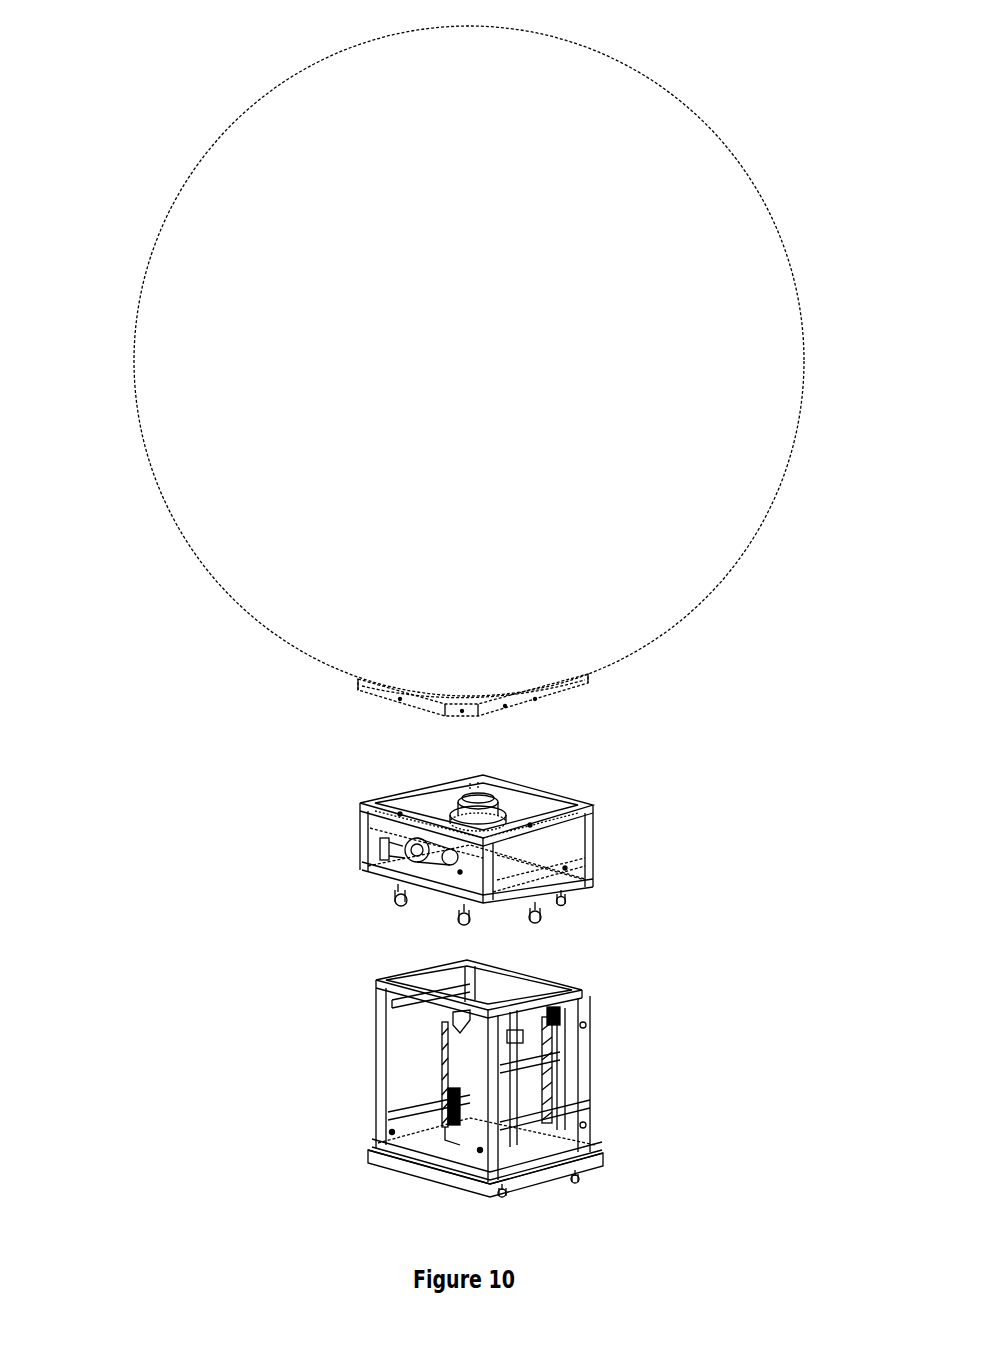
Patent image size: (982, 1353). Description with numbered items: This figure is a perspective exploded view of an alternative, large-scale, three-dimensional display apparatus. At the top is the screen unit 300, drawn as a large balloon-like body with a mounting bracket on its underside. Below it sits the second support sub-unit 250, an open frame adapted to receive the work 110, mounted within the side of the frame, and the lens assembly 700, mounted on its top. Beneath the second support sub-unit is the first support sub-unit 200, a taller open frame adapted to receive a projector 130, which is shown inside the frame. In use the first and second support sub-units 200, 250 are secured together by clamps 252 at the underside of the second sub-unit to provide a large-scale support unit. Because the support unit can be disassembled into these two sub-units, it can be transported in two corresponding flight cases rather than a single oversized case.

The screen unit 300 is at (172, 592).
The second support sub-unit 250 is at (598, 843).
The lens assembly 700 is at (497, 800).
The work 110 is at (408, 850).
The clamps 252 is at (590, 928).
The first support sub-unit 200 is at (607, 1077).
The projector 130 is at (455, 1064).